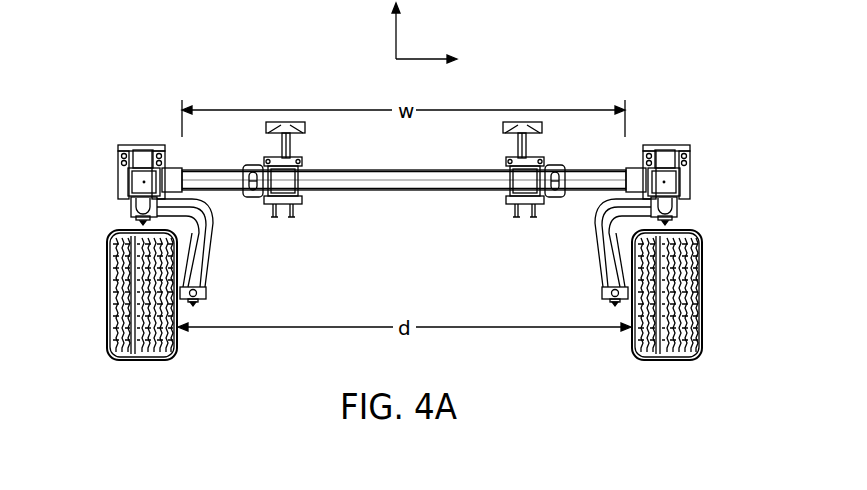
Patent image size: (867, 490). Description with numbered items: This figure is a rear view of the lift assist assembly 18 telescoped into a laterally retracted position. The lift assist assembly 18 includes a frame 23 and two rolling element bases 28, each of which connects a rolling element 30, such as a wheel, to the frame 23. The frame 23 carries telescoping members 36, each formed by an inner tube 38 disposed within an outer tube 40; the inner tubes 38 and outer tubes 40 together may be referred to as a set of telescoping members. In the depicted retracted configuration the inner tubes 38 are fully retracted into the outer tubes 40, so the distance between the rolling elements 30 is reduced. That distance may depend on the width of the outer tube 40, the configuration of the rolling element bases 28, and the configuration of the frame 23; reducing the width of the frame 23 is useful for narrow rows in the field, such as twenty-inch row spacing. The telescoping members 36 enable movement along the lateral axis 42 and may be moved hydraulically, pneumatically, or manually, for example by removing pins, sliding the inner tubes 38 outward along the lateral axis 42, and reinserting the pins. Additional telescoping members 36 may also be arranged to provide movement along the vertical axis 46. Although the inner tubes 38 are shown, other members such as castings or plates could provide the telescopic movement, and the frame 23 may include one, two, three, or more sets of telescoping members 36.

The lift assist assembly 18 is at (325, 156).
The frame 23 is at (368, 191).
The rolling element base 28 is at (90, 245).
The rolling element 30 is at (107, 313).
The telescoping member 36 is at (327, 209).
The inner tube 38 is at (176, 178).
The outer tube 40 is at (214, 168).
The lateral axis 42 is at (420, 59).
The vertical axis 46 is at (396, 30).